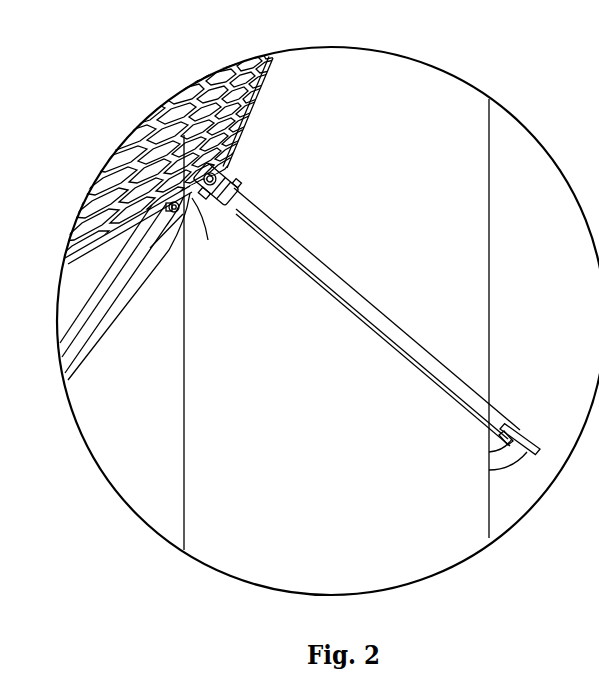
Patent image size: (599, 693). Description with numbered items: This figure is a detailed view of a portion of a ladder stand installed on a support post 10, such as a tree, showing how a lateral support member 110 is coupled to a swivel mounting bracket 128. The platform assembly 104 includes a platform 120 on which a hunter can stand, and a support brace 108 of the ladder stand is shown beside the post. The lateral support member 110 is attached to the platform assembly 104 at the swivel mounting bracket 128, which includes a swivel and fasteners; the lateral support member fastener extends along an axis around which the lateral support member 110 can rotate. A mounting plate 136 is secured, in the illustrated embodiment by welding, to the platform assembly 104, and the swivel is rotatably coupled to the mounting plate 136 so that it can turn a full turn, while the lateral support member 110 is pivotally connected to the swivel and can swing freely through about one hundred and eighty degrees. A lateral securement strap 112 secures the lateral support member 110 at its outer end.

The support post 10 is at (465, 187).
The platform assembly 104 is at (146, 137).
The support brace 108 is at (87, 318).
The lateral support member 110 is at (458, 391).
The lateral securement strap 112 is at (505, 452).
The platform 120 is at (232, 72).
The swivel mounting bracket 128 is at (243, 169).
The mounting plate 136 is at (193, 196).